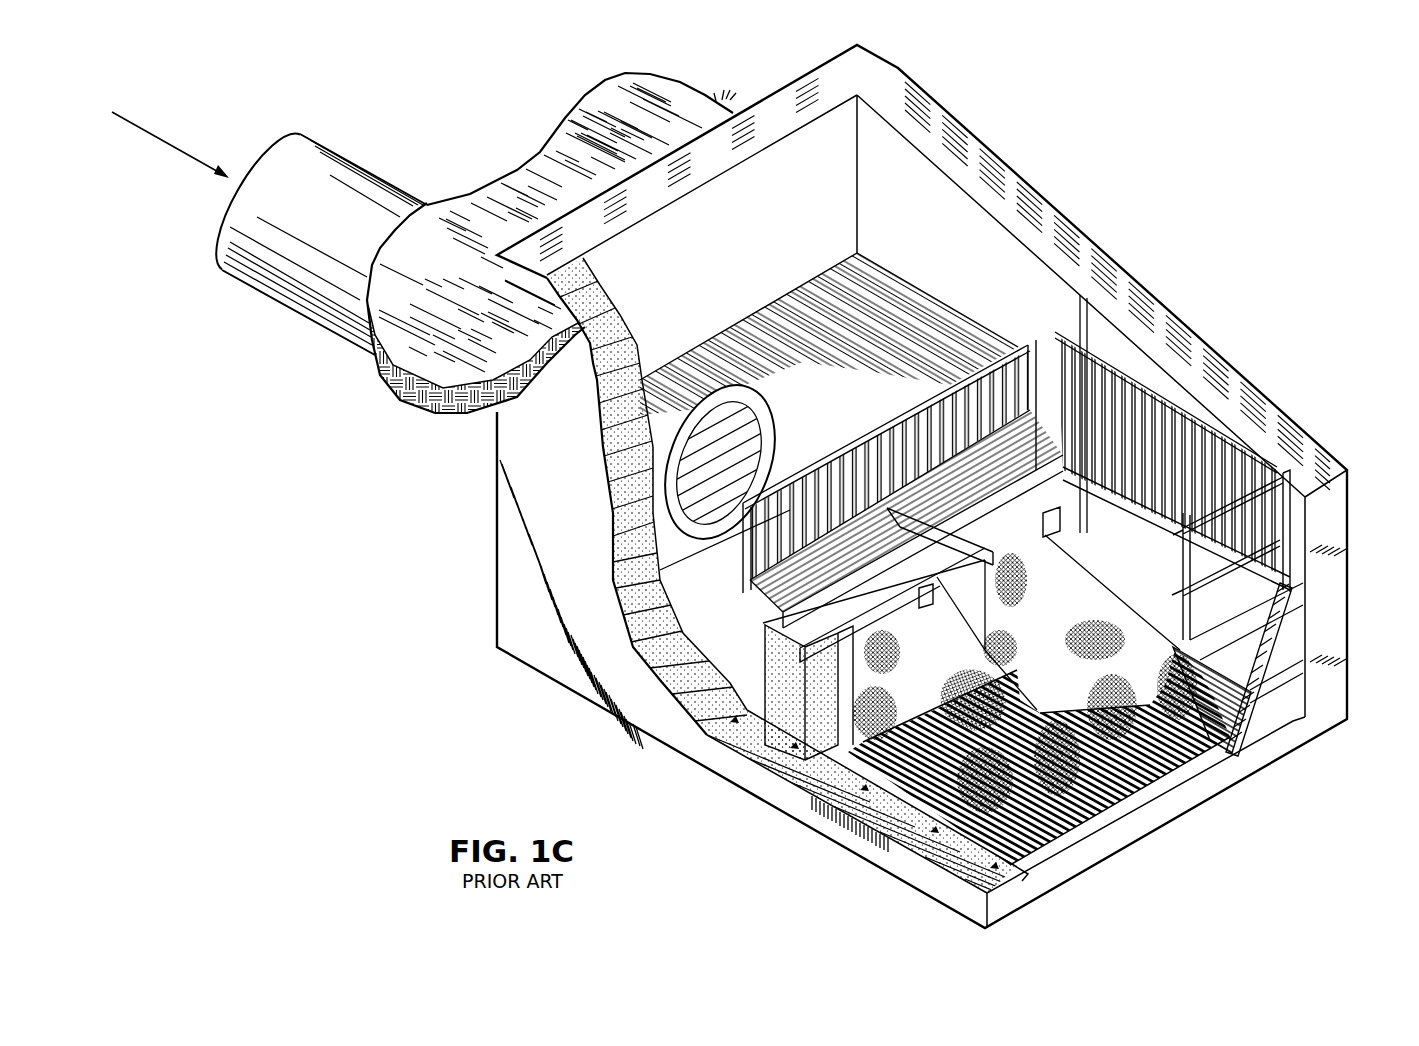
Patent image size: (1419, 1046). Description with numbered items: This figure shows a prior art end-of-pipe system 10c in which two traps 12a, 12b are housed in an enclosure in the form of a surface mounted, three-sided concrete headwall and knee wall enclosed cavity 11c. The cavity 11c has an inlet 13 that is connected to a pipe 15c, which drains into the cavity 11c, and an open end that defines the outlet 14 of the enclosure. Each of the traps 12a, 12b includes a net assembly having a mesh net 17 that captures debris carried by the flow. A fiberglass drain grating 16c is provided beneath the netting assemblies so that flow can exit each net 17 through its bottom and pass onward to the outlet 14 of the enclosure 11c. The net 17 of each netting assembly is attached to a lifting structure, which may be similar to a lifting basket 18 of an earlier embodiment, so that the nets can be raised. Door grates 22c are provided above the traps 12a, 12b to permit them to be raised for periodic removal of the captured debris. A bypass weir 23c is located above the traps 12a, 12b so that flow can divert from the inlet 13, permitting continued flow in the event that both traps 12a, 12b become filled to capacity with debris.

The end-of-pipe system 10c is at (1228, 157).
The enclosed cavity 11c is at (1027, 192).
The pipe 15c is at (290, 206).
The inlet 13 is at (752, 430).
The bypass weir 23c is at (1020, 372).
The door grates 22c is at (1187, 407).
The lifting basket 18 is at (924, 604).
The mesh net 17 is at (1060, 647).
The trap 12a is at (1027, 710).
The trap 12b is at (1137, 627).
The fiberglass drain grating 16c is at (1220, 680).
The floor slab 14 is at (1115, 859).